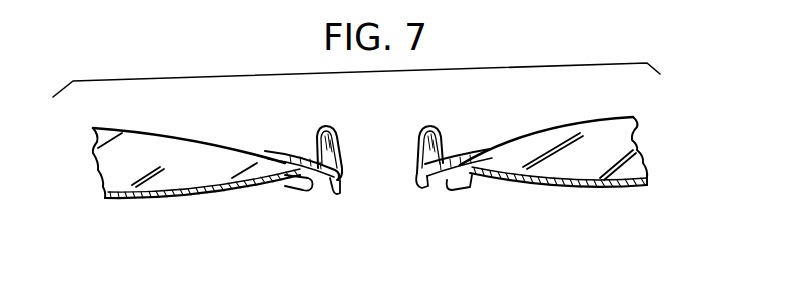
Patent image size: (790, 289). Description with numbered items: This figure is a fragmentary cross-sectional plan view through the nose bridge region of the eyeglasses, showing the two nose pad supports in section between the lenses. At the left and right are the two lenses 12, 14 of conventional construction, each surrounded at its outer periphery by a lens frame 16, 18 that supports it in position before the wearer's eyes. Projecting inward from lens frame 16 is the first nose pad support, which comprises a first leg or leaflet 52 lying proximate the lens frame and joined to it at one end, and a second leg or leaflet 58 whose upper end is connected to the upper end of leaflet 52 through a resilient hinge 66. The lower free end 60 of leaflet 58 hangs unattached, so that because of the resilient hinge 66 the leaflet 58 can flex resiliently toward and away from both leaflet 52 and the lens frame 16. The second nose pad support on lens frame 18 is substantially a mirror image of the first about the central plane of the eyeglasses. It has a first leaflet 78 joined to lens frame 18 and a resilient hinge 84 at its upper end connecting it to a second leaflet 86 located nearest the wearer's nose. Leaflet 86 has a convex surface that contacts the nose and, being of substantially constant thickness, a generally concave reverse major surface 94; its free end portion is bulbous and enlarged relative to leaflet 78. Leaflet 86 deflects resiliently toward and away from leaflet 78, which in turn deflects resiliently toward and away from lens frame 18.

The lens 12 is at (180, 183).
The lens 14 is at (637, 142).
The lens frame 16 is at (293, 192).
The lens frame 18 is at (463, 188).
The first leaflet 52 is at (302, 158).
The second leaflet 58 is at (338, 142).
The lower free end 60 is at (317, 138).
The resilient hinge 66 is at (340, 195).
The first leaflet 78 is at (462, 150).
The resilient hinge 84 is at (420, 184).
The second leaflet 86 is at (417, 142).
The reverse major surface 94 is at (437, 142).